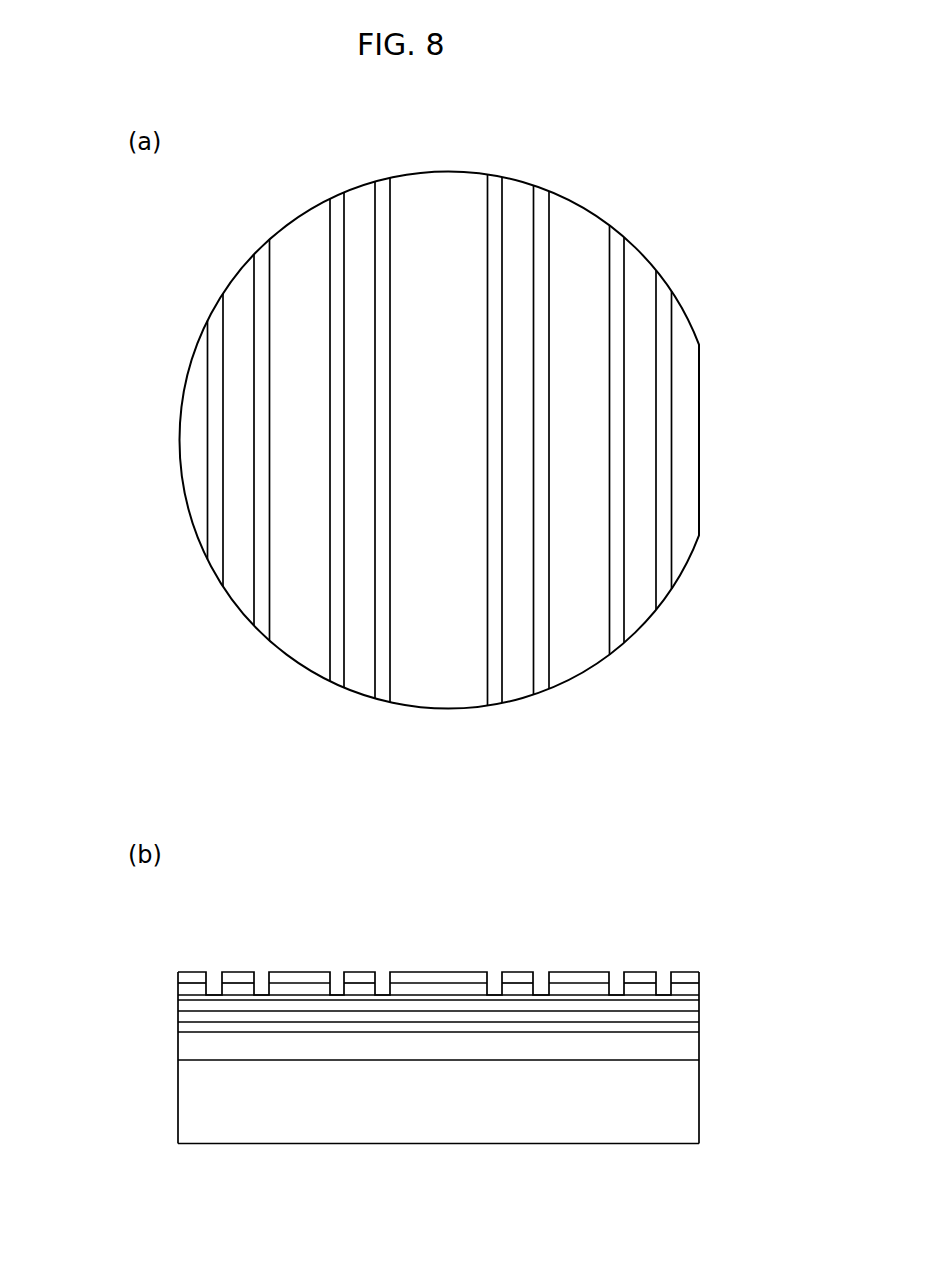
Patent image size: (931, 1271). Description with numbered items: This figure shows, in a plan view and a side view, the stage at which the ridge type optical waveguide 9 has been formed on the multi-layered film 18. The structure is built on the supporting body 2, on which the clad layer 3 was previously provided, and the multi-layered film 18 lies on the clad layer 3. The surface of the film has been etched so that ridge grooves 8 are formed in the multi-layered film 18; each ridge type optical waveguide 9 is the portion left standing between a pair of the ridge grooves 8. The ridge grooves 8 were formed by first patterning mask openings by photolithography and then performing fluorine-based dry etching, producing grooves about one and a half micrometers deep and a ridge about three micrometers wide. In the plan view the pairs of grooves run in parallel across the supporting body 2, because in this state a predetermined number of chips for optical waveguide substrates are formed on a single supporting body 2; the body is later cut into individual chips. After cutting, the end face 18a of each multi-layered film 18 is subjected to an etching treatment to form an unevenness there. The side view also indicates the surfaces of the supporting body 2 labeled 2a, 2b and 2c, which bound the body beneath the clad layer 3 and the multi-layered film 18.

The supporting body 2 is at (473, 1128).
The main surface of substrate 2a is at (453, 1062).
The back surface of substrate 2b is at (630, 1144).
The side surface of substrate 2c is at (700, 1087).
The clad layer 3 is at (690, 1047).
The ridge grooves 8 is at (533, 230).
The ridge type optical waveguide 9 is at (513, 237).
The multi-layered film 18 is at (682, 330).
The end face of multi-layered film 18a is at (178, 1008).